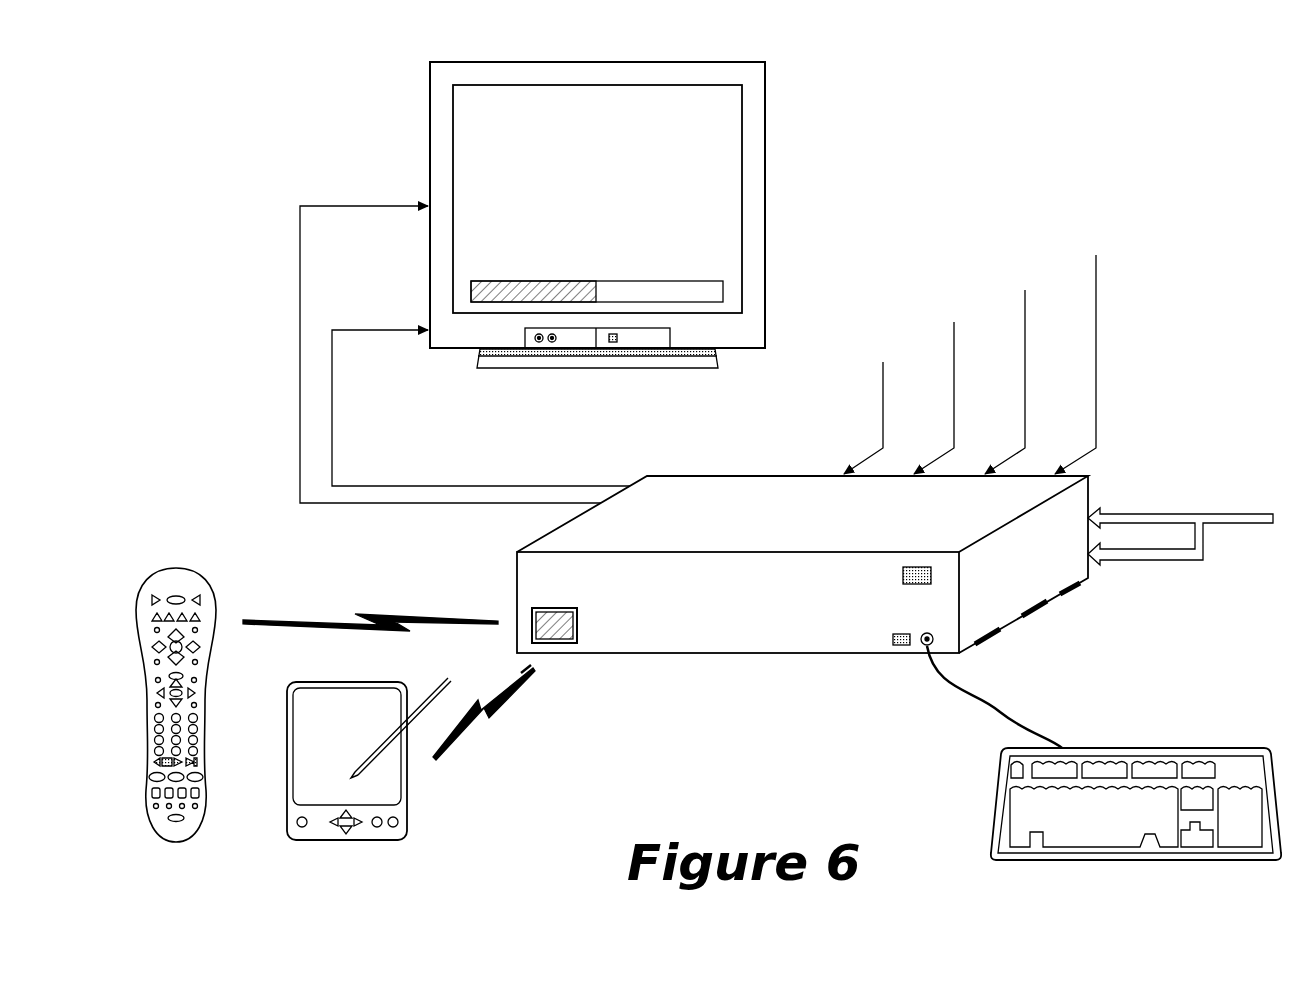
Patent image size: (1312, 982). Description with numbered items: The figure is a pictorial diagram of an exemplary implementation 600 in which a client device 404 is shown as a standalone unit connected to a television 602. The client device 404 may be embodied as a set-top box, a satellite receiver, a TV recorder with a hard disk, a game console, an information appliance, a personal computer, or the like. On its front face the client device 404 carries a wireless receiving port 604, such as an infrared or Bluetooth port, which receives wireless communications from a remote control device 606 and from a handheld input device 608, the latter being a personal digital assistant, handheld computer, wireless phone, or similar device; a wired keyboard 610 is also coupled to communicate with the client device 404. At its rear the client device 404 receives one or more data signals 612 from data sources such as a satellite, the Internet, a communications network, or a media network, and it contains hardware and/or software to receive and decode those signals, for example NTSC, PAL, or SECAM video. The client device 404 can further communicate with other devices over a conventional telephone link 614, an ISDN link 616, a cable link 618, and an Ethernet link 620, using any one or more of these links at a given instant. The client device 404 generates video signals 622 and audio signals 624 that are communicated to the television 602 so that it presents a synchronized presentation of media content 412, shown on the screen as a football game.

The exemplary implementation 600 is at (1190, 130).
The media content 412 is at (727, 128).
The television 602 is at (765, 217).
The client device 404 is at (712, 475).
The wireless receiving port 604 is at (567, 608).
The remote control device 606 is at (177, 565).
The handheld input device 608 is at (405, 788).
The wired keyboard 610 is at (1182, 748).
The data signal 612 is at (1157, 562).
The telephone link 614 is at (883, 310).
The ISDN link 616 is at (954, 275).
The cable link 618 is at (1025, 240).
The Ethernet link 620 is at (1096, 208).
The video signal 622 is at (450, 336).
The audio signal 624 is at (481, 390).